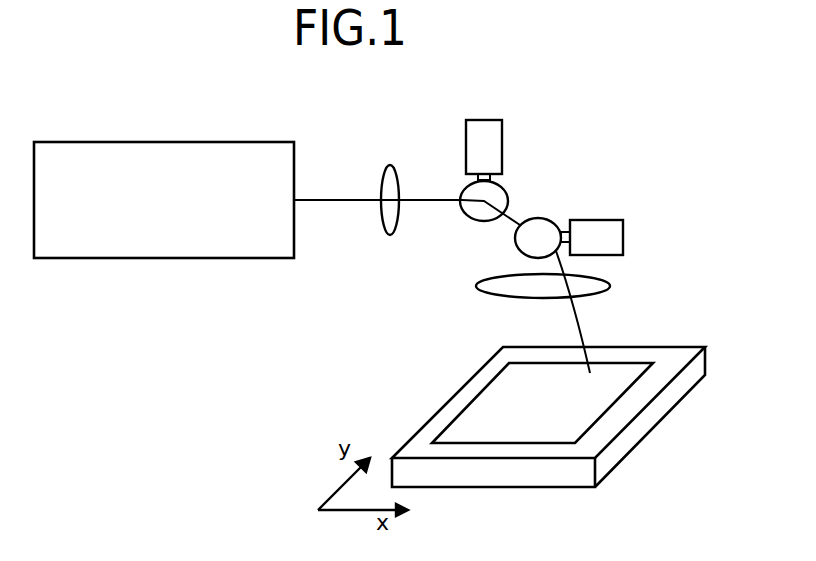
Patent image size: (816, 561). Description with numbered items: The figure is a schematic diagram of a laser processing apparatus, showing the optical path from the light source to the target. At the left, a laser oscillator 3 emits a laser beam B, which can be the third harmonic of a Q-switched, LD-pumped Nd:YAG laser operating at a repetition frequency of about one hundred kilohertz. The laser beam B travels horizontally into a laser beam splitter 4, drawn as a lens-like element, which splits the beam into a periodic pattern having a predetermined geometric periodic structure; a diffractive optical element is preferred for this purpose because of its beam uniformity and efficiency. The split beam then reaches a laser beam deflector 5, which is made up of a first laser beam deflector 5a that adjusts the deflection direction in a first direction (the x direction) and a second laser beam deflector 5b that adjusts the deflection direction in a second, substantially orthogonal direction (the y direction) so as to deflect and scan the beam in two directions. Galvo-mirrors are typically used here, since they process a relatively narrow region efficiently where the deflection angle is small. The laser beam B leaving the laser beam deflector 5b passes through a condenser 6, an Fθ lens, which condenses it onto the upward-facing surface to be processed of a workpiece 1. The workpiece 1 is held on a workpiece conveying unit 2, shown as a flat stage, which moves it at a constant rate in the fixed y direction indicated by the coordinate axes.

The workpiece 1 is at (477, 392).
The workpiece conveying unit 2 is at (447, 413).
The laser oscillator 3 is at (159, 150).
The laser beam splitter 4 is at (390, 166).
The laser beam deflector 5 is at (559, 189).
The laser beam deflector 5a is at (492, 157).
The laser beam deflector 5b is at (595, 227).
The condenser 6 is at (484, 283).
The laser beam B is at (333, 202).